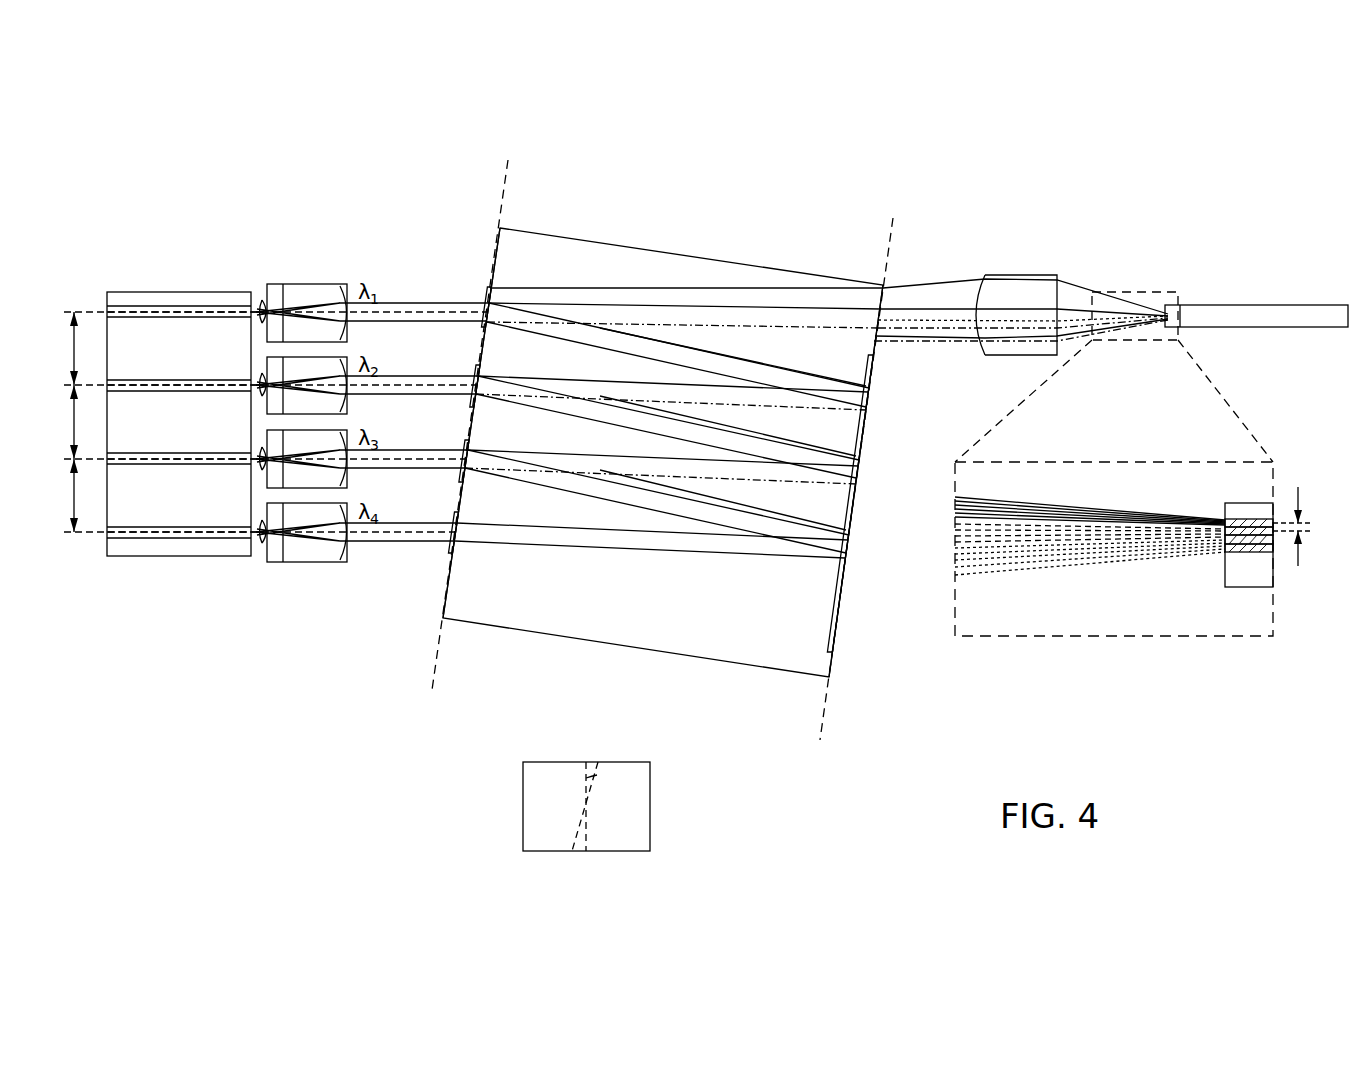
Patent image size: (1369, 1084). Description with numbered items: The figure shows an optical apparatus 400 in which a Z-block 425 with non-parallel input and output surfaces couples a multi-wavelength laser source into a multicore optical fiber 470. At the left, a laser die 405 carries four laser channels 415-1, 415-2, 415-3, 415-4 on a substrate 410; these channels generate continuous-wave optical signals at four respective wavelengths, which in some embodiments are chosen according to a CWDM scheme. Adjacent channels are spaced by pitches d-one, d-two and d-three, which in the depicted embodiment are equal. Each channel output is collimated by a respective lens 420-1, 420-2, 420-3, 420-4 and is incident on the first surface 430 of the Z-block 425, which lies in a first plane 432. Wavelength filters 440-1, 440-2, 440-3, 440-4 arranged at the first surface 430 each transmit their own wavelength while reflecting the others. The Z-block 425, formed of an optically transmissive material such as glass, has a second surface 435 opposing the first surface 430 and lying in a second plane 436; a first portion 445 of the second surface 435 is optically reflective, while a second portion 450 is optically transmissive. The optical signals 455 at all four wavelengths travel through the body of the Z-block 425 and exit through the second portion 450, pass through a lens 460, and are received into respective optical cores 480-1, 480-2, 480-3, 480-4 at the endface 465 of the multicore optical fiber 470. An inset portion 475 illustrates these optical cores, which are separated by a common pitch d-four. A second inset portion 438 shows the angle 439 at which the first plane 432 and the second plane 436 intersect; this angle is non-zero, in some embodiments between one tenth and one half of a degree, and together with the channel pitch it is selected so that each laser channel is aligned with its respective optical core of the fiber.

The optical apparatus 400 is at (1160, 186).
The laser die 405 is at (122, 592).
The substrate 410 is at (201, 291).
The laser channel 415-1 is at (213, 319).
The laser channel 415-2 is at (213, 393).
The laser channel 415-3 is at (213, 466).
The laser channel 415-4 is at (213, 540).
The lens 420-1 is at (334, 283).
The lens 420-2 is at (334, 357).
The lens 420-3 is at (334, 430).
The lens 420-4 is at (334, 503).
The Z-block 425 is at (581, 228).
The first surface 430 is at (444, 596).
The first plane 432 is at (432, 663).
The second surface 435 is at (830, 678).
The second plane 436 is at (816, 719).
The inset portion 438 is at (656, 802).
The angle 439 is at (597, 762).
The wavelength filter 440-1 is at (488, 290).
The wavelength filter 440-2 is at (478, 366).
The wavelength filter 440-3 is at (468, 444).
The wavelength filter 440-4 is at (454, 552).
The first portion 445 is at (844, 618).
The second portion 450 is at (878, 356).
The optical signals 455 is at (937, 290).
The lens 460 is at (1036, 275).
The endface 465 is at (1166, 304).
The multicore optical fiber 470 is at (1298, 305).
The inset portion 475 is at (1222, 395).
The optical core 480-1 is at (1236, 553).
The optical core 480-2 is at (1253, 548).
The optical core 480-3 is at (1262, 537).
The optical core 480-4 is at (1262, 519).